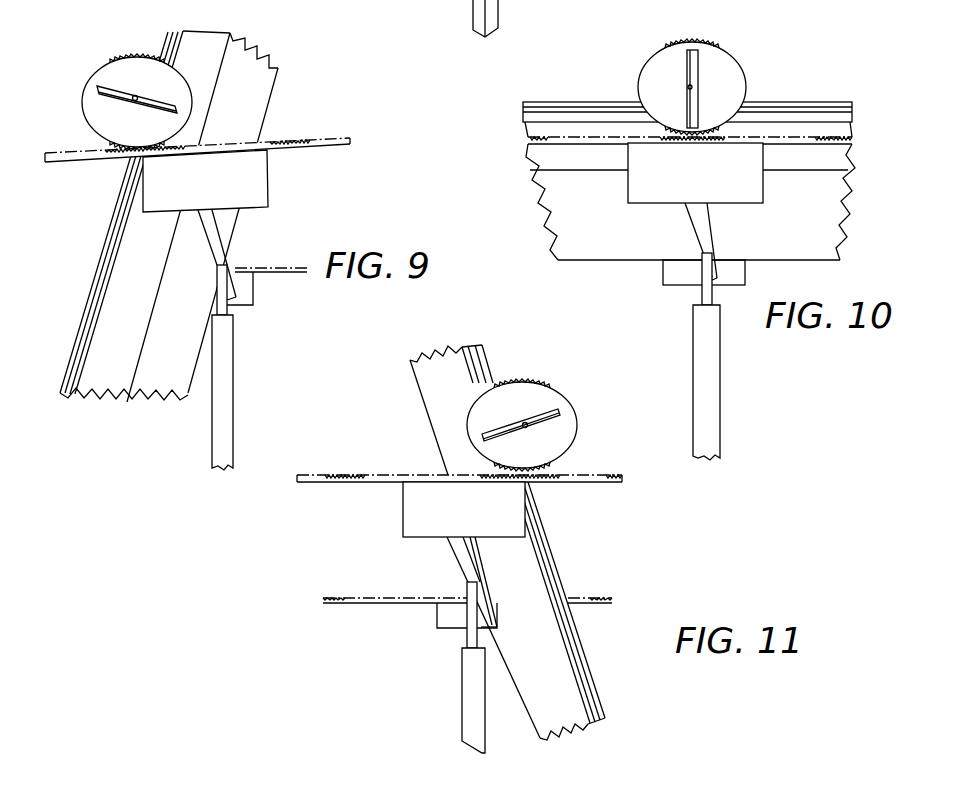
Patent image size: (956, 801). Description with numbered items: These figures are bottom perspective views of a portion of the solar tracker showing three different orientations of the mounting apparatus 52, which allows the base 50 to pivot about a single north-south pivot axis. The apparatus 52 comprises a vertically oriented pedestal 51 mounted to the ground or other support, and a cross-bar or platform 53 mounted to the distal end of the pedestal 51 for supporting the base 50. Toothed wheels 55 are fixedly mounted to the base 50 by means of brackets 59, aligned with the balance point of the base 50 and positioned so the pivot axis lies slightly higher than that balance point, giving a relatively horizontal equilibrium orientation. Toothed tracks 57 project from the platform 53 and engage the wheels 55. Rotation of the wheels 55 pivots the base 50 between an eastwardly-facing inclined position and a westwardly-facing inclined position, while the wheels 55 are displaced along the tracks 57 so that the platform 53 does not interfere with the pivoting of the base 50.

In FIG. 9, the base 50 is at (117, 301).
In FIG. 10, the base 50 is at (574, 229).
In FIG. 11, the base 50 is at (507, 624).
In FIG. 9, the pedestal 51 is at (227, 420).
In FIG. 10, the pedestal 51 is at (720, 392).
In FIG. 11, the pedestal 51 is at (472, 707).
In FIG. 9, the mounting apparatus 52 is at (256, 314).
In FIG. 10, the mounting apparatus 52 is at (681, 298).
In FIG. 11, the mounting apparatus 52 is at (443, 650).
In FIG. 9, the platform 53 is at (223, 237).
In FIG. 10, the platform 53 is at (695, 223).
In FIG. 11, the platform 53 is at (463, 558).
In FIG. 9, the toothed wheel 55 is at (123, 72).
In FIG. 10, the toothed wheel 55 is at (723, 65).
In FIG. 11, the toothed wheel 55 is at (530, 395).
In FIG. 9, the toothed track 57 is at (310, 147).
In FIG. 10, the toothed track 57 is at (783, 140).
In FIG. 11, the toothed track 57 is at (592, 484).
In FIG. 9, the bracket 59 is at (100, 95).
In FIG. 10, the bracket 59 is at (689, 65).
In FIG. 11, the bracket 59 is at (483, 437).